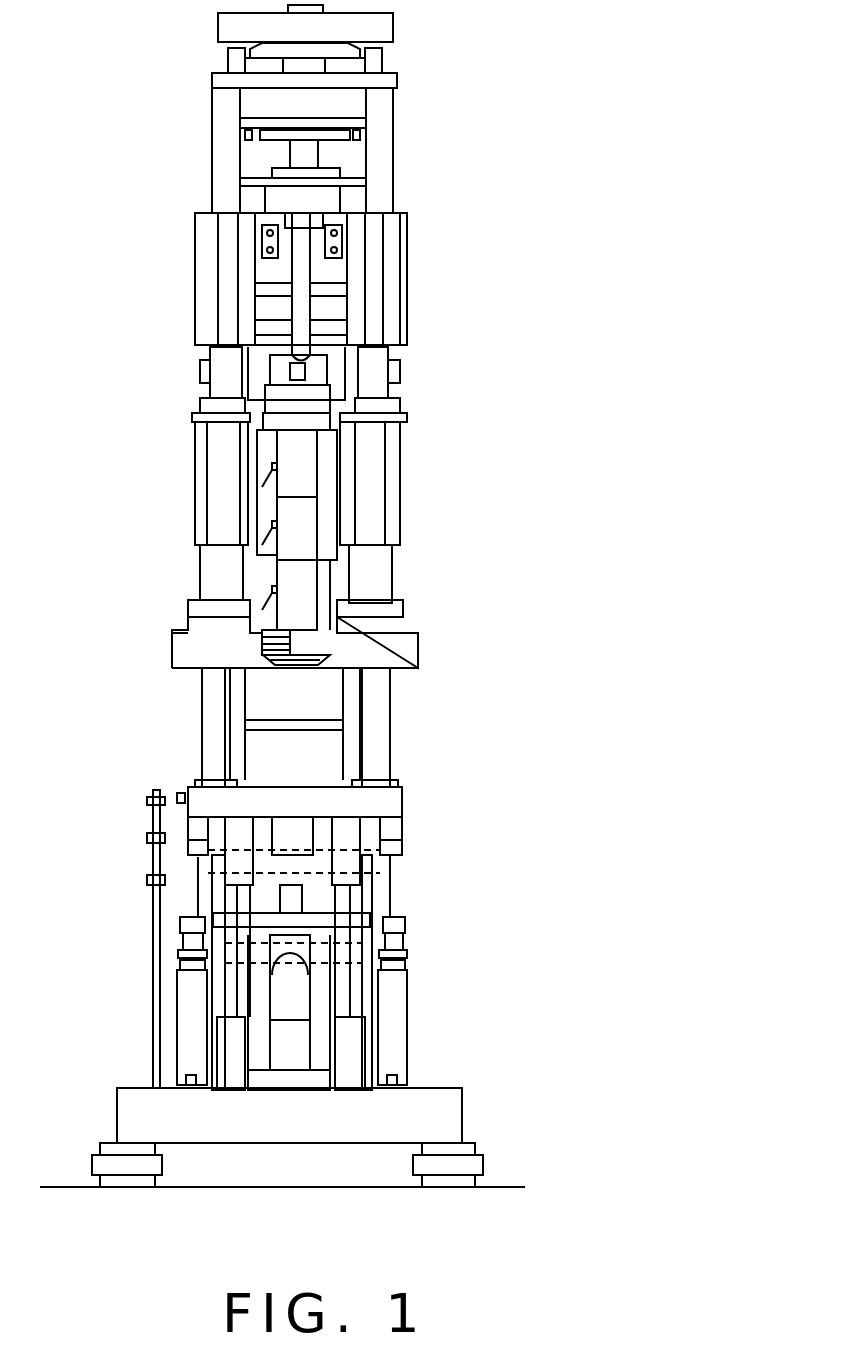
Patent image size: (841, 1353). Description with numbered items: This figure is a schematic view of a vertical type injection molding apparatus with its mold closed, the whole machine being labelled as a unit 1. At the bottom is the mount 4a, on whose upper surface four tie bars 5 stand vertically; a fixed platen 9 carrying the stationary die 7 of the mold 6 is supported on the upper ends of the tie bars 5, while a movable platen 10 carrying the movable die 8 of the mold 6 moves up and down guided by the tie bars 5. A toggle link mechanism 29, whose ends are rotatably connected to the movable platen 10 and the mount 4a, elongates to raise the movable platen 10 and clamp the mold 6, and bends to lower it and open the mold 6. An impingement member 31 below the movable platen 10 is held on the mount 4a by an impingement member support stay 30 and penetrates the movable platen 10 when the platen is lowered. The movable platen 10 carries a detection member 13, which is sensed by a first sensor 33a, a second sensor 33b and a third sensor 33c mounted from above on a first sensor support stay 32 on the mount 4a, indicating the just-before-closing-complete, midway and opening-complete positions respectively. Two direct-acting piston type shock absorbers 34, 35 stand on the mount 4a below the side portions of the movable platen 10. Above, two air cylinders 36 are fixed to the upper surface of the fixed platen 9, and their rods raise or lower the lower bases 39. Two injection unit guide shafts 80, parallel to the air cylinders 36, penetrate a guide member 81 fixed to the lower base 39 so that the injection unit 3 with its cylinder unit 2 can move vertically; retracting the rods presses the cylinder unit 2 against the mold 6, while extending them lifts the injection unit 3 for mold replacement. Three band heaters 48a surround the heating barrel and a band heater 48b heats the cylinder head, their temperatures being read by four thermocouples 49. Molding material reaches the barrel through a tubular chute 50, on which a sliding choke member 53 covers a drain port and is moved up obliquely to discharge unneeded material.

The lower forging unit 1 is at (413, 933).
The cylinder unit 2 is at (330, 482).
The injection unit 3 is at (405, 382).
The mount 4a is at (443, 1122).
The tie bars 5 is at (213, 700).
The mold 6 is at (242, 717).
The stationary die 7 is at (327, 707).
The movable die 8 is at (327, 758).
The fixed platen 9 is at (403, 650).
The movable platen 10 is at (383, 808).
The detection member 13 is at (178, 793).
The toggle link mechanism 29 is at (313, 1035).
The impingement member support stay 30 is at (296, 900).
The impingement member 31 is at (310, 872).
The first sensor support stay 32 is at (152, 1035).
The first sensor 33a is at (148, 800).
The second sensor 33b is at (148, 840).
The third sensor 33c is at (148, 878).
The shock absorber 34 is at (185, 1000).
The shock absorber 35 is at (390, 1062).
The air cylinders 36 is at (200, 435).
The lower base 39 is at (398, 350).
The band heaters 48a is at (292, 447).
The band heater 48b is at (282, 634).
The thermocouples 49 is at (262, 478).
The chute 50 is at (303, 300).
The choke member 53 is at (298, 378).
The injection unit guide shafts 80 is at (228, 130).
The guide member 81 is at (390, 275).